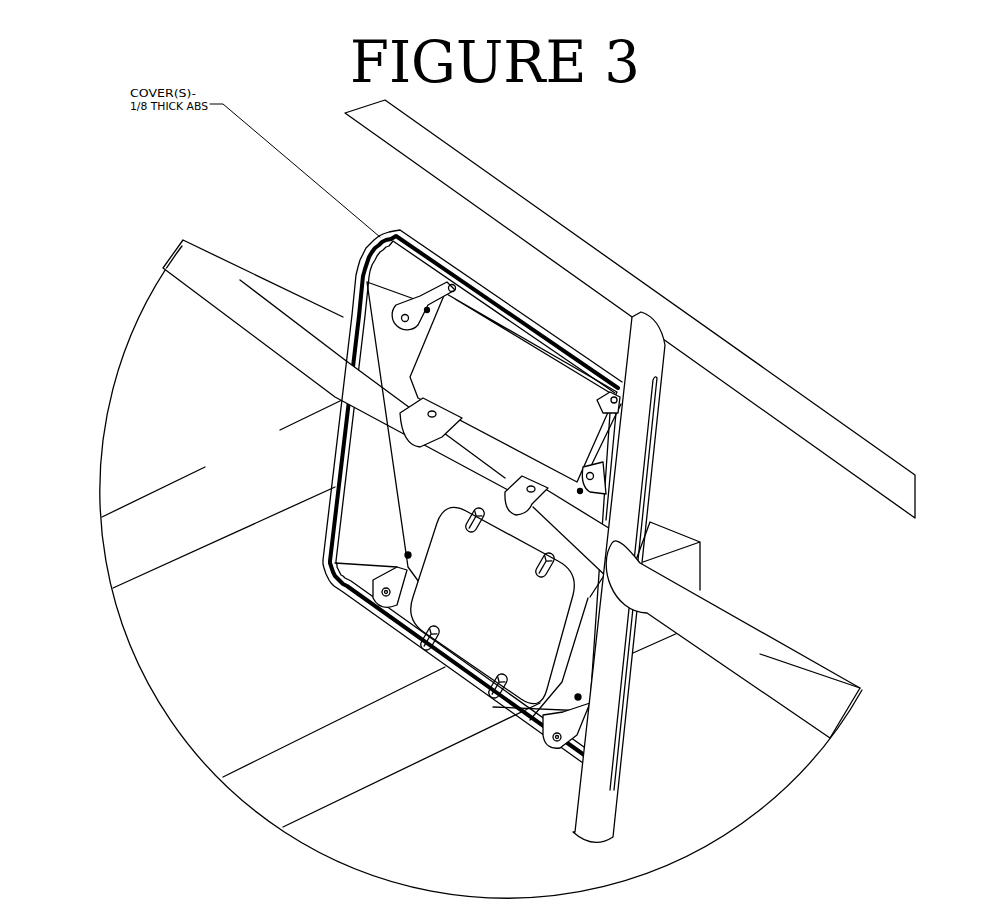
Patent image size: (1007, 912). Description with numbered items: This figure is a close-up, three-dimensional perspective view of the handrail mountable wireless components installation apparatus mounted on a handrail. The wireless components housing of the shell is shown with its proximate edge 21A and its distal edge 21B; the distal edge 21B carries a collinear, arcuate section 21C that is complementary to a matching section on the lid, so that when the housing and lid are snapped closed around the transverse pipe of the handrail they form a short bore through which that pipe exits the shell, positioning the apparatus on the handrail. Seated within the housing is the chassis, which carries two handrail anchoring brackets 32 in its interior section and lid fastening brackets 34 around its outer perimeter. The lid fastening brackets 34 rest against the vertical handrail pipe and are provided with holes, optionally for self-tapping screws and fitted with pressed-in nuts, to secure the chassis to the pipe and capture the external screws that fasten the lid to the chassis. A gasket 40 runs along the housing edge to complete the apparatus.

The proximate edge 21A is at (663, 410).
The distal edge 21B is at (392, 466).
The arcuate section 21C is at (341, 354).
The handrail anchoring brackets 32 is at (511, 495).
The lid fastening brackets 34 is at (407, 300).
The gasket 40 is at (389, 246).